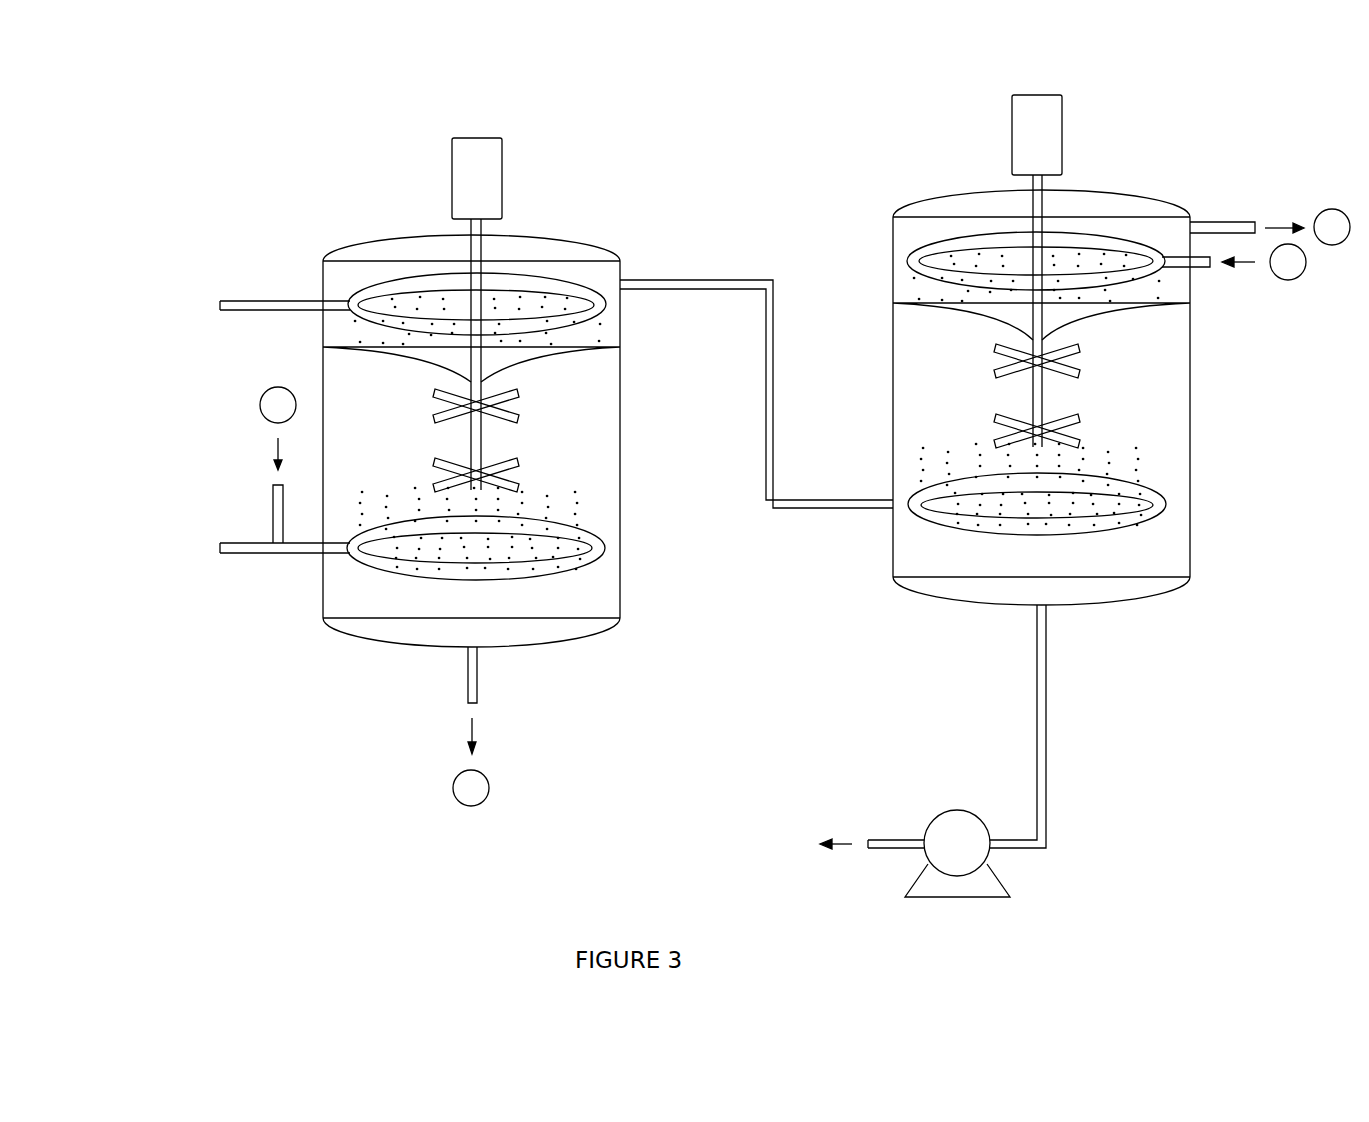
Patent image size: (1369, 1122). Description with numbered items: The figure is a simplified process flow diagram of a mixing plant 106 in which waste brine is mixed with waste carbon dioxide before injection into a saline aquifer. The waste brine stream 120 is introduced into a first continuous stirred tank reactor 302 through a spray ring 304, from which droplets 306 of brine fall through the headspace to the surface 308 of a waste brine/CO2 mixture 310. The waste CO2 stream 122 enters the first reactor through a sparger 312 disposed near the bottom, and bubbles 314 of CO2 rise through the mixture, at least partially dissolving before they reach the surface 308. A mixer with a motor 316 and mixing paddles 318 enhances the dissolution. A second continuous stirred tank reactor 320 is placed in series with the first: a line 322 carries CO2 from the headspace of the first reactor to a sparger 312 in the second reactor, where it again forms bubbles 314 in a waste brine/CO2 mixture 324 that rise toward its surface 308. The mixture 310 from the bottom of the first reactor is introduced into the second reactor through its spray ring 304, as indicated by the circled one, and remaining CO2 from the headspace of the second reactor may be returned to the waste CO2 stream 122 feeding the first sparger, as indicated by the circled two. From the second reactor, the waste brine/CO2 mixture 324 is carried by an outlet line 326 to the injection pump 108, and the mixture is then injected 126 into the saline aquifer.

The mixing plant 106 is at (698, 921).
The injection pump 108 is at (957, 810).
The waste brine stream 120 is at (200, 304).
The waste CO2 stream 122 is at (198, 548).
The injection into saline aquifer 126 is at (845, 840).
The first continuous stirred tank reactor (CSTR) 302 is at (540, 236).
The spray ring 304 is at (352, 297).
The droplets 306 is at (635, 297).
The surface 308 is at (592, 350).
The waste brine/CO2 mixture 310 is at (340, 592).
The sparger 312 is at (593, 562).
The bubbles 314 is at (635, 493).
The motor 316 is at (485, 138).
The mixing paddles 318 is at (510, 460).
The second continuous stirred tank reactor (CSTR) 320 is at (1110, 190).
The line 322 is at (742, 280).
The waste brine/CO2 mixture 324 is at (902, 548).
The outlet line 326 is at (1036, 660).